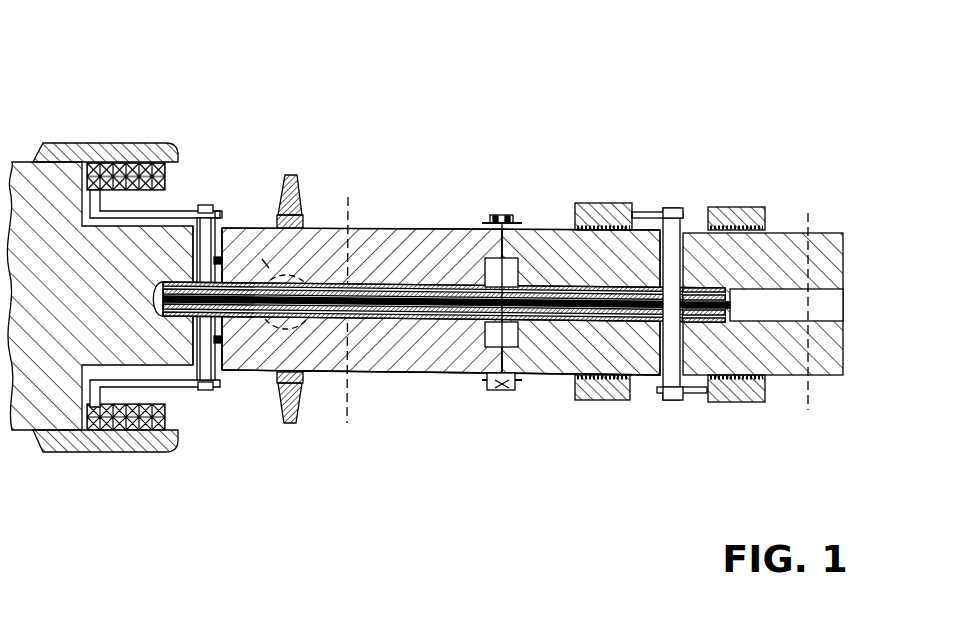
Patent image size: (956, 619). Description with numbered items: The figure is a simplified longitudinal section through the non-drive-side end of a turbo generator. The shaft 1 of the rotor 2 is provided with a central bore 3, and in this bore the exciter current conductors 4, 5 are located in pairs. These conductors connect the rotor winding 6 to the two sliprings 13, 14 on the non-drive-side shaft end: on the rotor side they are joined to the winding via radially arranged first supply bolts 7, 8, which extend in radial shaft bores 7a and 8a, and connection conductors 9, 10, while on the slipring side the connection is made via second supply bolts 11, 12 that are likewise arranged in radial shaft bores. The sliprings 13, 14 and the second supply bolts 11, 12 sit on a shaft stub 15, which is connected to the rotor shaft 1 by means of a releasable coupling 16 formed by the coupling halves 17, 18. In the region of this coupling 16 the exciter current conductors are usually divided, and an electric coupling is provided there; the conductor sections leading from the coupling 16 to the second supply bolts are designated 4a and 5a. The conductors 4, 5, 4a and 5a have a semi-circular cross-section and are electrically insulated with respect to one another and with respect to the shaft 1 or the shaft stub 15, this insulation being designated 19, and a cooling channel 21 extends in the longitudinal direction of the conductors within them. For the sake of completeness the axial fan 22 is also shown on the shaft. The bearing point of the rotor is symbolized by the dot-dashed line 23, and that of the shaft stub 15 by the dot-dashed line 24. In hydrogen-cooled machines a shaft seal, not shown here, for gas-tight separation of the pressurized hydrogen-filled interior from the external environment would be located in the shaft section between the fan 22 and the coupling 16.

The shaft 1 is at (460, 347).
The rotor 2 is at (67, 466).
The central bore 3 is at (441, 427).
The exciter current conductor 4 is at (373, 373).
The exciter current conductor 4a is at (557, 375).
The exciter current conductor 5 is at (385, 283).
The exciter current conductor 5a is at (567, 295).
The rotor winding 6 is at (128, 172).
The first supply bolt 7 is at (219, 395).
The radial shaft bore 7a is at (253, 400).
The first supply bolt 8 is at (203, 225).
The radial shaft bore 8a is at (243, 119).
The connection conductor 9 is at (169, 384).
The connection conductor 10 is at (173, 214).
The second supply bolt 11 is at (649, 480).
The second supply bolt 12 is at (670, 233).
The slipring 13 is at (620, 212).
The slipring 14 is at (724, 215).
The shaft stub 15 is at (788, 262).
The releasable coupling 16 is at (502, 428).
The coupling half 17 is at (495, 218).
The coupling half 18 is at (512, 218).
The insulation 19 is at (325, 371).
The cooling channel 21 is at (424, 284).
The axial fan 22 is at (292, 172).
The dot-dashed line 23 is at (348, 197).
The dot-dashed line 24 is at (808, 405).